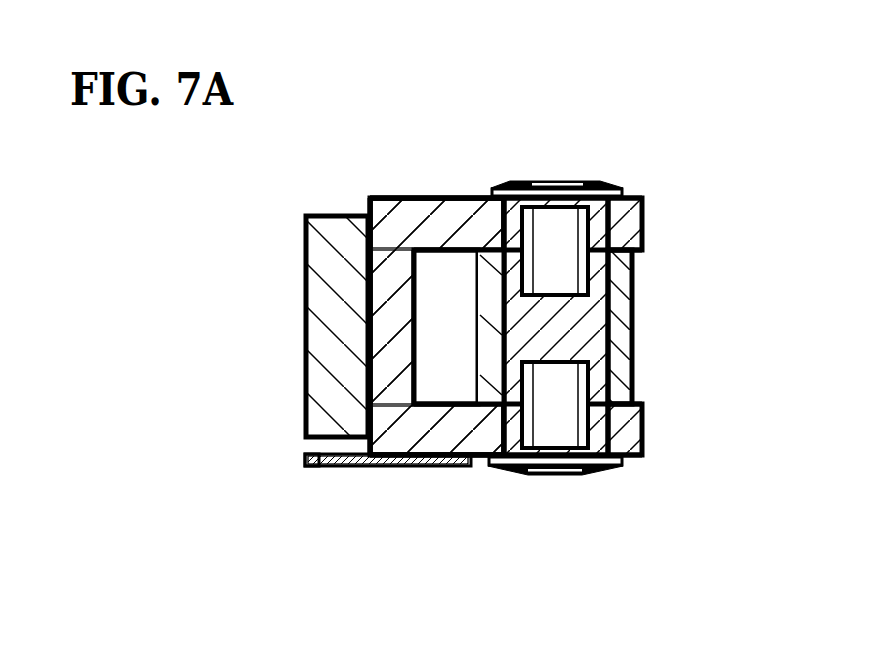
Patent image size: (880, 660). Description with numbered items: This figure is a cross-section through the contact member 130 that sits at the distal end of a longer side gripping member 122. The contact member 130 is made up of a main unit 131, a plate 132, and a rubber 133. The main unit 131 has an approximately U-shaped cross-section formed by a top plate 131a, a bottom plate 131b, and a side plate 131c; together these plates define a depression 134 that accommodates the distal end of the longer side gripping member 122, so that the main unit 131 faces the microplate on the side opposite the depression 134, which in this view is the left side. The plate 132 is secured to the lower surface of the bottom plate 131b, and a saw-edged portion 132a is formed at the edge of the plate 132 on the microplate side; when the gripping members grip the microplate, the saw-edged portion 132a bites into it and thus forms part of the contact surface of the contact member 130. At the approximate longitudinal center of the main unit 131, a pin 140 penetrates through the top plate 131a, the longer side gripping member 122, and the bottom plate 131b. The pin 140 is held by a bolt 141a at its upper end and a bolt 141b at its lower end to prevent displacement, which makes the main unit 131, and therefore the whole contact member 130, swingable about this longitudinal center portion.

The contact member 130 is at (648, 178).
The main unit 131 is at (366, 322).
The top plate 131a is at (435, 197).
The bottom plate 131b is at (435, 443).
The side plate 131c is at (382, 370).
The plate 132 is at (334, 503).
The saw-edged portion 132a is at (303, 458).
The rubber 133 is at (313, 293).
The depression 134 is at (413, 285).
The pin 140 is at (597, 338).
The bolt 141a is at (553, 180).
The bolt 141b is at (558, 475).
The longer side gripping member 122 is at (625, 282).